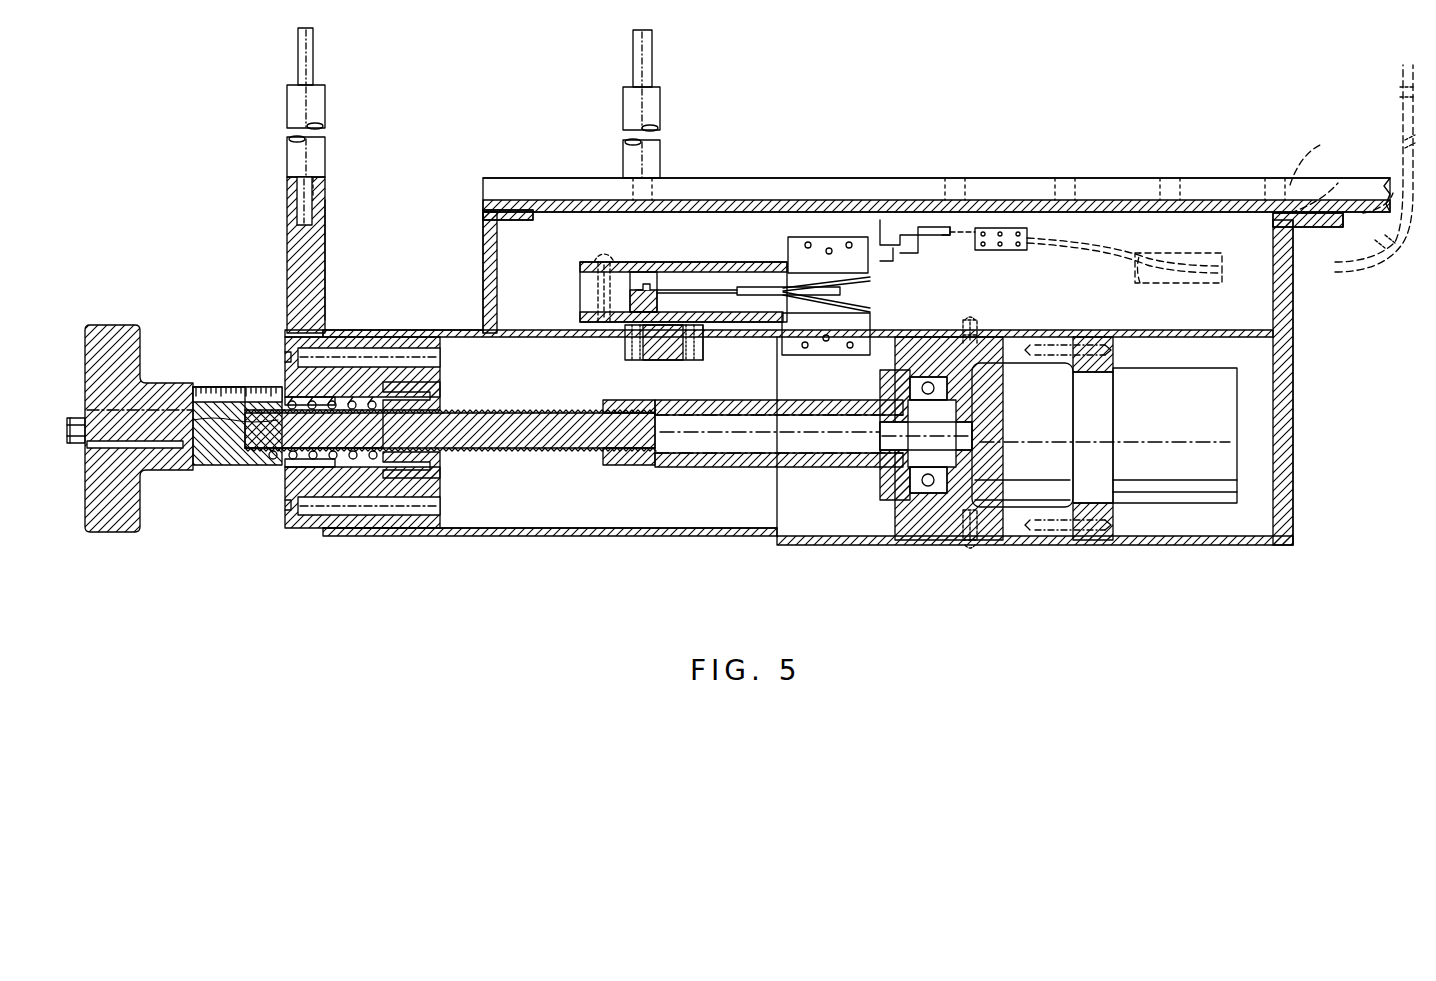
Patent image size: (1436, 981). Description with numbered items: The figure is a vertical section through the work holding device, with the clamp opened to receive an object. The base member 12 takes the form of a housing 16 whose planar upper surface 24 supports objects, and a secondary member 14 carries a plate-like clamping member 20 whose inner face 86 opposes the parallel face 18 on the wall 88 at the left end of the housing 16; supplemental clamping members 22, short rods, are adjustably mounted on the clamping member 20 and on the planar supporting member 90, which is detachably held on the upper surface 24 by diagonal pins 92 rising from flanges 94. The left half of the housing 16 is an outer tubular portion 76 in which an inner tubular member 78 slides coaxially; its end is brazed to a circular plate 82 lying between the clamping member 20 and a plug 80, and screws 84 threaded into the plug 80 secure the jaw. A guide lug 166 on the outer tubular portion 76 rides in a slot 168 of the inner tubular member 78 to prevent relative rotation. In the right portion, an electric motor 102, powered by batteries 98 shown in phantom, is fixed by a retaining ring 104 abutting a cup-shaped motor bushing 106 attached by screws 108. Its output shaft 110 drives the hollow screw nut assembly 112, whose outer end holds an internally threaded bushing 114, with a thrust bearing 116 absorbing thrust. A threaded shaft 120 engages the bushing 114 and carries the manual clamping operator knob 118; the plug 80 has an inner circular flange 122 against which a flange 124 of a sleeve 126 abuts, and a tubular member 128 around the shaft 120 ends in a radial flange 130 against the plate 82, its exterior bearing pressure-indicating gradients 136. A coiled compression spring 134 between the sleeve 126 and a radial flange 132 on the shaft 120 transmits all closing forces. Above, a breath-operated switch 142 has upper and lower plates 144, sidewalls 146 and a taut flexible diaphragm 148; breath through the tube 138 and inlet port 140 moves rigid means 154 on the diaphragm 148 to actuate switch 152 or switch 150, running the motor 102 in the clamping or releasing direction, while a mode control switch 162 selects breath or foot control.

The base member 12 is at (1310, 330).
The secondary member 14 is at (278, 240).
The housing 16 is at (1293, 412).
The face 18 is at (483, 233).
The clamping member 20 is at (288, 294).
The supplemental clamping members 22 is at (313, 54).
The planar upper surface 24 is at (885, 198).
The outer tubular portion 76 is at (524, 330).
The inner tubular member 78 is at (447, 536).
The plug 80 is at (440, 374).
The circular plate 82 is at (322, 530).
The screws 84 is at (298, 370).
The inner face 86 is at (325, 255).
The wall 88 is at (497, 270).
The planar supporting member 90 is at (1010, 180).
The pins 92 is at (540, 188).
The flanges 94 is at (517, 223).
The batteries 98 is at (1148, 288).
The electric motor 102 is at (1232, 401).
The retaining ring 104 is at (1090, 370).
The motor bushing 106 is at (898, 484).
The screws 108 is at (1003, 332).
The output shaft 110 is at (968, 432).
The screw nut assembly 112 is at (835, 400).
The threaded bushing 114 is at (605, 400).
The thrust bearing 116 is at (950, 392).
The clamping operator knob 118 is at (112, 325).
The threaded shaft 120 is at (553, 445).
The inner circular flange 122 is at (438, 474).
The flange 124 is at (438, 390).
The sleeve 126 is at (400, 455).
The tubular member 128 is at (212, 465).
The radial flange 130 is at (366, 333).
The radial flange 132 is at (252, 418).
The coiled compression spring 134 is at (360, 465).
The pressure-indicating gradients 136 is at (200, 387).
The tube 138 is at (1403, 122).
The inlet port 140 is at (935, 216).
The breath-operated switch 142 is at (698, 235).
The upper and lower plates 144 is at (710, 313).
The sidewalls 146 is at (628, 265).
The flexible diaphragm 148 is at (675, 280).
The switch 150 is at (836, 237).
The switch 152 is at (848, 342).
The rigid means 154 is at (752, 295).
The mode control switch 162 is at (1020, 228).
The guide lug 166 is at (662, 358).
The slot 168 is at (716, 345).